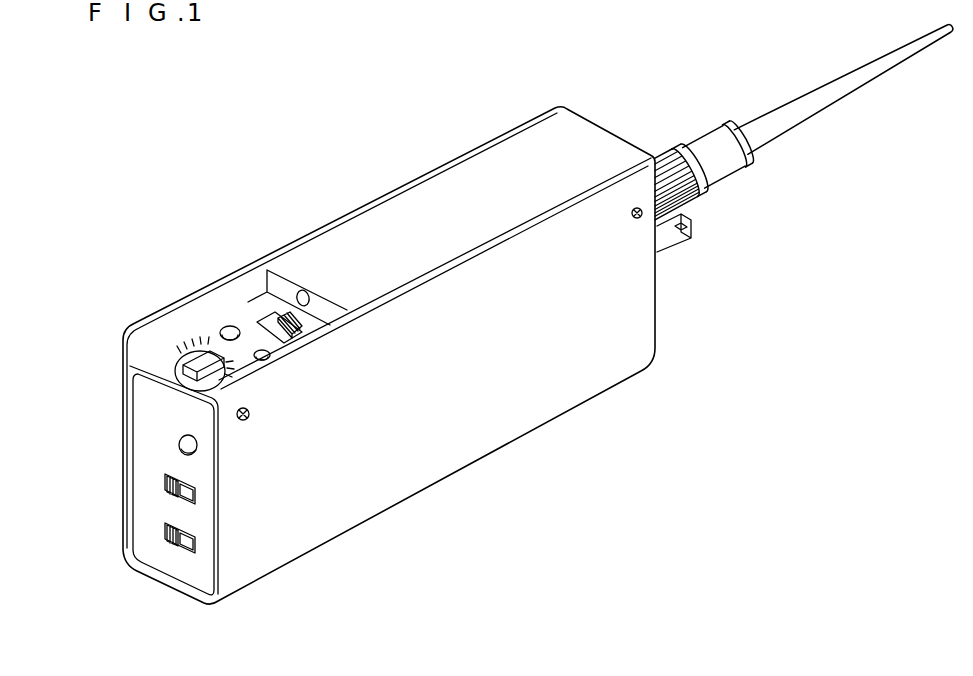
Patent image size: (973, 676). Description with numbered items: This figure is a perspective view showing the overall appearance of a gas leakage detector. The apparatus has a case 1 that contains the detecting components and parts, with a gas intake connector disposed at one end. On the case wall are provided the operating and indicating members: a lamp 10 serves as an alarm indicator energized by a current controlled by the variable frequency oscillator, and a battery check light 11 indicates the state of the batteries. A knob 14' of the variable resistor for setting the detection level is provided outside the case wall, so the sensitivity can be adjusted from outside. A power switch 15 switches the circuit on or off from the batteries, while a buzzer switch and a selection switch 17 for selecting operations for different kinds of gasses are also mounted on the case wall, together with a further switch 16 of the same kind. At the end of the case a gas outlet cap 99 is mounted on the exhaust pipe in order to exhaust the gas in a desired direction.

The case 1 is at (522, 408).
The lamp 10 is at (228, 328).
The battery check light 11 is at (262, 359).
The knob 14' is at (172, 320).
The power switch 15 is at (263, 317).
The slide switch on end face 16 is at (167, 487).
The buzzer switch / selection switch 17 is at (167, 533).
The gas outlet cap 99 is at (666, 230).